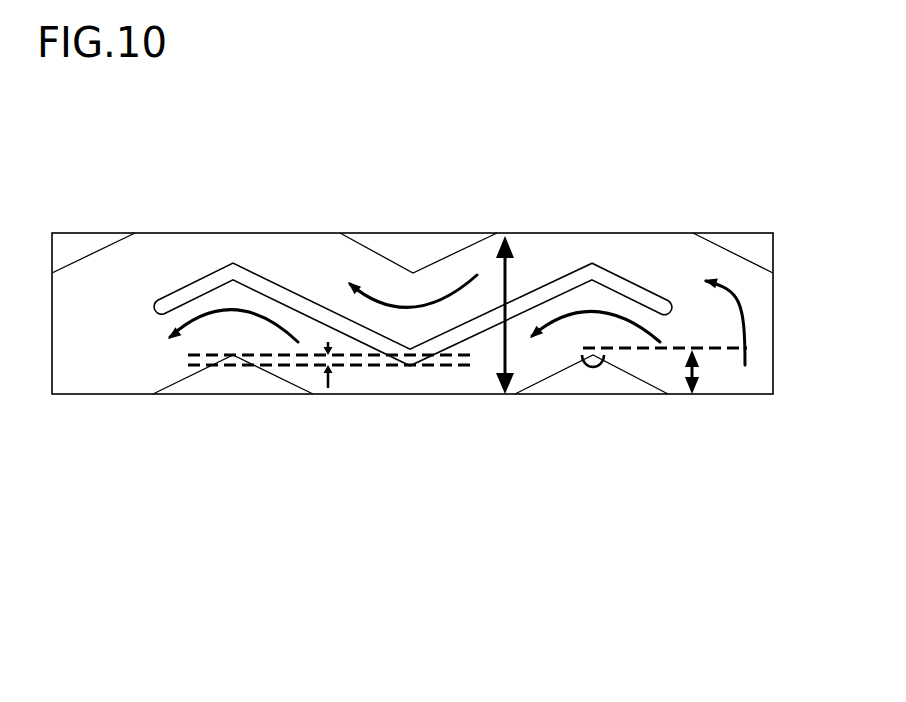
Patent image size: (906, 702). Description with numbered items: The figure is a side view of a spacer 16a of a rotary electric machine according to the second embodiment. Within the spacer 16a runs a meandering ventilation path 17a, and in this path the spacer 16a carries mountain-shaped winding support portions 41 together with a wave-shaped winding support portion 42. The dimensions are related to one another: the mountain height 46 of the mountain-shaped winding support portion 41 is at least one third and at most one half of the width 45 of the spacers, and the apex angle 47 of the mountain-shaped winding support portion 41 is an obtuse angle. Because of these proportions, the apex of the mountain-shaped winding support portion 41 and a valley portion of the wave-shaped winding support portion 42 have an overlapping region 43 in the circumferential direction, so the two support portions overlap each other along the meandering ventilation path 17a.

The meandering ventilation path 17a is at (130, 307).
The spacer 16a is at (742, 244).
The width of the spacers 45 is at (520, 297).
The wave-shaped winding support portion 42 is at (492, 321).
The mountain-shaped winding support portion 41 is at (223, 383).
The overlapping region 43 is at (330, 362).
The apex angle 47 is at (597, 368).
The mountain height 46 is at (697, 382).